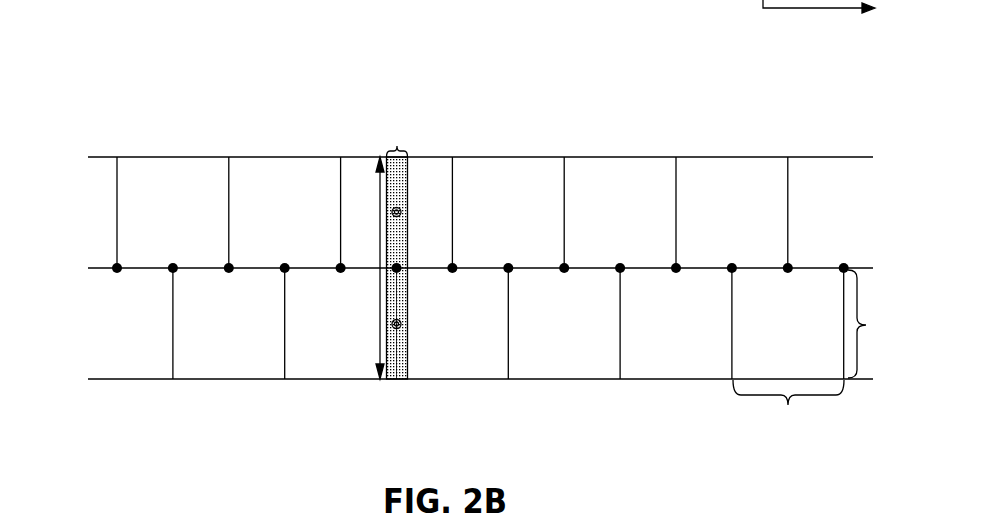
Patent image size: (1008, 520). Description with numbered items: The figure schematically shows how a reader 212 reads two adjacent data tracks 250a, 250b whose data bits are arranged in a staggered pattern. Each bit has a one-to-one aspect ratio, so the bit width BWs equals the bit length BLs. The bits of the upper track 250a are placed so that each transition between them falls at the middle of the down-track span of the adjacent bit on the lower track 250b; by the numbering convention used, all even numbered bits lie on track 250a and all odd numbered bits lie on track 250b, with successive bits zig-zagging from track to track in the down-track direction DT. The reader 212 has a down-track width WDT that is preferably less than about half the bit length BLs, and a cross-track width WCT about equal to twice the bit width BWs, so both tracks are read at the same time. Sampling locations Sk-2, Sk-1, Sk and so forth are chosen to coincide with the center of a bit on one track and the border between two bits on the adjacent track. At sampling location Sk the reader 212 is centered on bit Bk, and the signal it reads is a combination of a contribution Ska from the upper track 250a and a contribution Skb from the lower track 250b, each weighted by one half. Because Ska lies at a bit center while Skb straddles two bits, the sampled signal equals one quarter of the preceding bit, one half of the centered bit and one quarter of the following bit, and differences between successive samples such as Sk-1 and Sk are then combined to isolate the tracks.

The reader 212 is at (409, 175).
The data track 250a is at (76, 219).
The data track 250b is at (76, 330).
The down-track direction DT is at (819, 18).
The cross-track width WCT is at (384, 196).
The down-track width WDT is at (402, 136).
The upper track contribution Ska is at (392, 210).
The lower track contribution Skb is at (401, 327).
The sampling location Sk is at (392, 268).
The sampling location Sk-1 is at (341, 271).
The sampling location Sk-2 is at (281, 267).
The bit width BWs is at (885, 324).
The bit length BLs is at (788, 414).